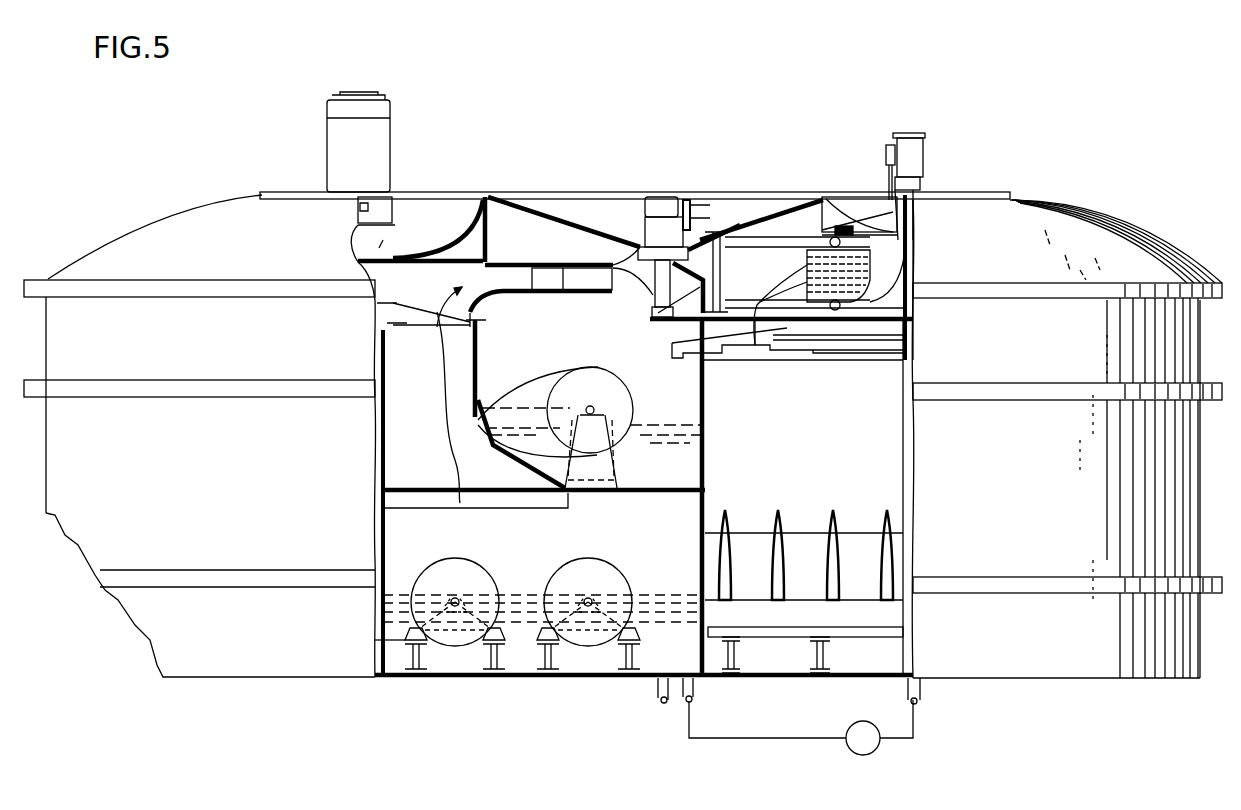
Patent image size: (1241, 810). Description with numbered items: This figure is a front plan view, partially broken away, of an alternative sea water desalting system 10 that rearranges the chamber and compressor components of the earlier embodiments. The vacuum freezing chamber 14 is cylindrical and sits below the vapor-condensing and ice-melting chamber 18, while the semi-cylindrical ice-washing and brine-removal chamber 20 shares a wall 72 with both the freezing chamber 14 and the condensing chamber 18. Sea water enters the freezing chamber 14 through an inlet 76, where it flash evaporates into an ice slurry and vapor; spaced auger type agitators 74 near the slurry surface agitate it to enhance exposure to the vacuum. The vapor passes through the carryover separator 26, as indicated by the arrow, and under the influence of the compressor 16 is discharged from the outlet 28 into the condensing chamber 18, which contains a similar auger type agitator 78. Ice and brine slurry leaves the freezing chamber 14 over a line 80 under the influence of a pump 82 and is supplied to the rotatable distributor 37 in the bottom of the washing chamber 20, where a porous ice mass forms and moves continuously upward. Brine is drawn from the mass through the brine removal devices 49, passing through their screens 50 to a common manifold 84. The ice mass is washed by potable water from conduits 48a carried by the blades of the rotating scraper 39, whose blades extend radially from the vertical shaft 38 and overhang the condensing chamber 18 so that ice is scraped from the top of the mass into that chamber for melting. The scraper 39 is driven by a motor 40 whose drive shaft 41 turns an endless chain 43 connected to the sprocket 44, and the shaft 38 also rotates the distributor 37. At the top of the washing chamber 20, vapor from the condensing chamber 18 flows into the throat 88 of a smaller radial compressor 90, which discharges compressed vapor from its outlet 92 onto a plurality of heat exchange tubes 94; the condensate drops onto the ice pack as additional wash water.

The apparatus 10 is at (224, 192).
The vacuum freezing chamber 14 is at (575, 545).
The compressor 16 is at (400, 228).
The vapor-condensing and ice-melting chamber 18 is at (504, 380).
The ice-washing and brine-removal chamber 20 is at (786, 420).
The carryover separator 26 is at (508, 505).
The outlet 28 is at (613, 283).
The rotatable distributor 37 is at (835, 630).
The shaft 38 is at (903, 432).
The rotating scraper 39 is at (672, 350).
The motor 40 is at (656, 230).
The drive shaft 41 is at (662, 310).
The endless chain 43 is at (716, 318).
The sprocket 44 is at (785, 330).
The conduits 48a is at (878, 340).
The brine removal devices 49 is at (830, 560).
The screens 50 is at (838, 532).
The wall 72 is at (705, 370).
The auger type agitators 74 is at (445, 575).
The inlet 76 is at (657, 697).
The auger type agitator 78 is at (540, 392).
The line 80 is at (703, 737).
The pump 82 is at (868, 720).
The common manifold 84 is at (757, 545).
The throat 88 is at (895, 285).
The radial compressor 90 is at (918, 179).
The outlet 92 is at (870, 232).
The heat exchange tubes 94 is at (783, 326).